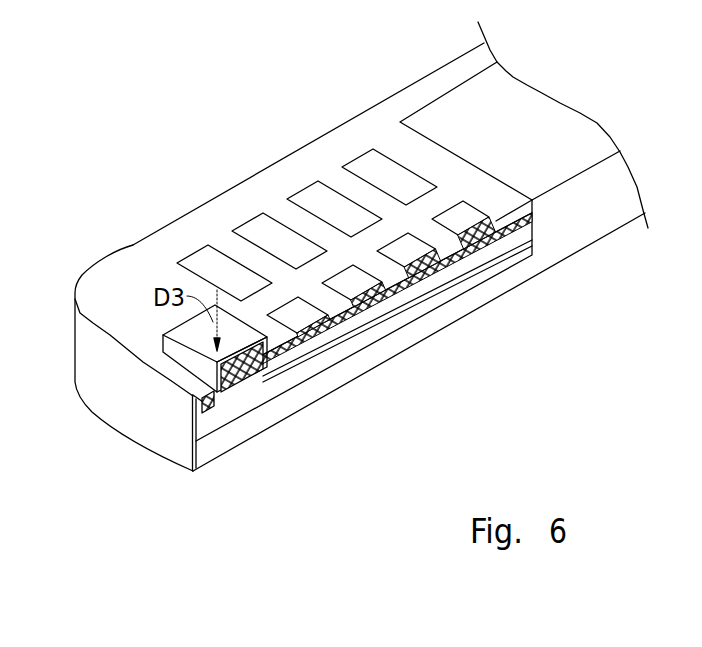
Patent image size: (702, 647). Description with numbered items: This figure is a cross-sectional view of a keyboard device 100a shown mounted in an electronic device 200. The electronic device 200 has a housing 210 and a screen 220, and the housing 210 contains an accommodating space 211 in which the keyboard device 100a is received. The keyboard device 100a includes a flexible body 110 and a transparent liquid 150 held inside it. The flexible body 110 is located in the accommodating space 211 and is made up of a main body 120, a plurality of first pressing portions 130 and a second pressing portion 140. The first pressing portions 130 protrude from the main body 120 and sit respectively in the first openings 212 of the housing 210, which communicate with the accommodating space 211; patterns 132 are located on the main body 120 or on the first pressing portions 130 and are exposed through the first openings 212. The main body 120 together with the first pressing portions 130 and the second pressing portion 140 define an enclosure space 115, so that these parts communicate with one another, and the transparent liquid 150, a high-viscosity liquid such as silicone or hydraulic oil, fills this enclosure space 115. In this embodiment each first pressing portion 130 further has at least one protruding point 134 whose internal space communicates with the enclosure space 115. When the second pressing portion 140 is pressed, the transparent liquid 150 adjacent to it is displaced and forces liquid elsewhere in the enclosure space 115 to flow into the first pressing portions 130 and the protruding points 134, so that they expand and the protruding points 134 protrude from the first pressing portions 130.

The electronic device 200 is at (62, 127).
The housing 210 is at (133, 261).
The accommodating space 211 is at (481, 286).
The first openings 212 is at (248, 217).
The screen 220 is at (546, 111).
The keyboard device 100a is at (213, 592).
The flexible body 110 is at (155, 540).
The enclosure space 115 is at (333, 344).
The main body 120 is at (203, 400).
The first pressing portions 130 is at (220, 253).
The patterns 132 is at (283, 233).
The protruding point 134 is at (313, 183).
The second pressing portion 140 is at (207, 340).
The transparent liquid 150 is at (223, 400).